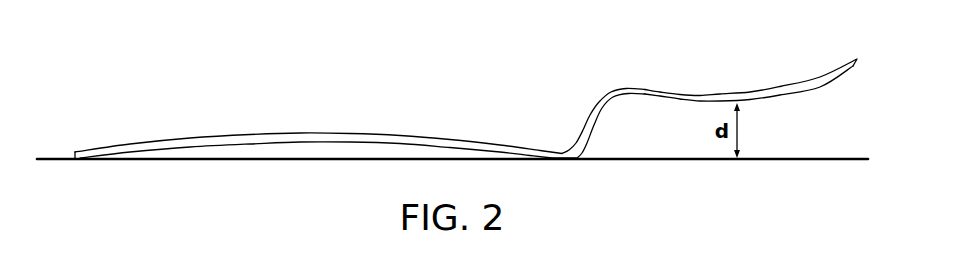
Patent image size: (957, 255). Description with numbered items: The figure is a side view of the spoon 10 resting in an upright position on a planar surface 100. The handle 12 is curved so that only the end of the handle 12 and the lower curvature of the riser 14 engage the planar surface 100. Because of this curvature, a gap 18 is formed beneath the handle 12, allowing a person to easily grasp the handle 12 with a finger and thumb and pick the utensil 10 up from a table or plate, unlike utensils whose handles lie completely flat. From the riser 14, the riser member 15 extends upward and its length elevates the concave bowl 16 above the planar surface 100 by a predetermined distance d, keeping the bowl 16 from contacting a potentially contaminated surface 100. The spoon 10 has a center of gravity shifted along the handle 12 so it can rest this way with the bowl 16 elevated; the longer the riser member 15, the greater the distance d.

The spoon 10 is at (466, 110).
The handle 12 is at (318, 158).
The riser 14 is at (596, 103).
The riser member 15 is at (588, 142).
The bowl 16 is at (775, 86).
The gap 18 is at (318, 150).
The planar surface 100 is at (797, 151).